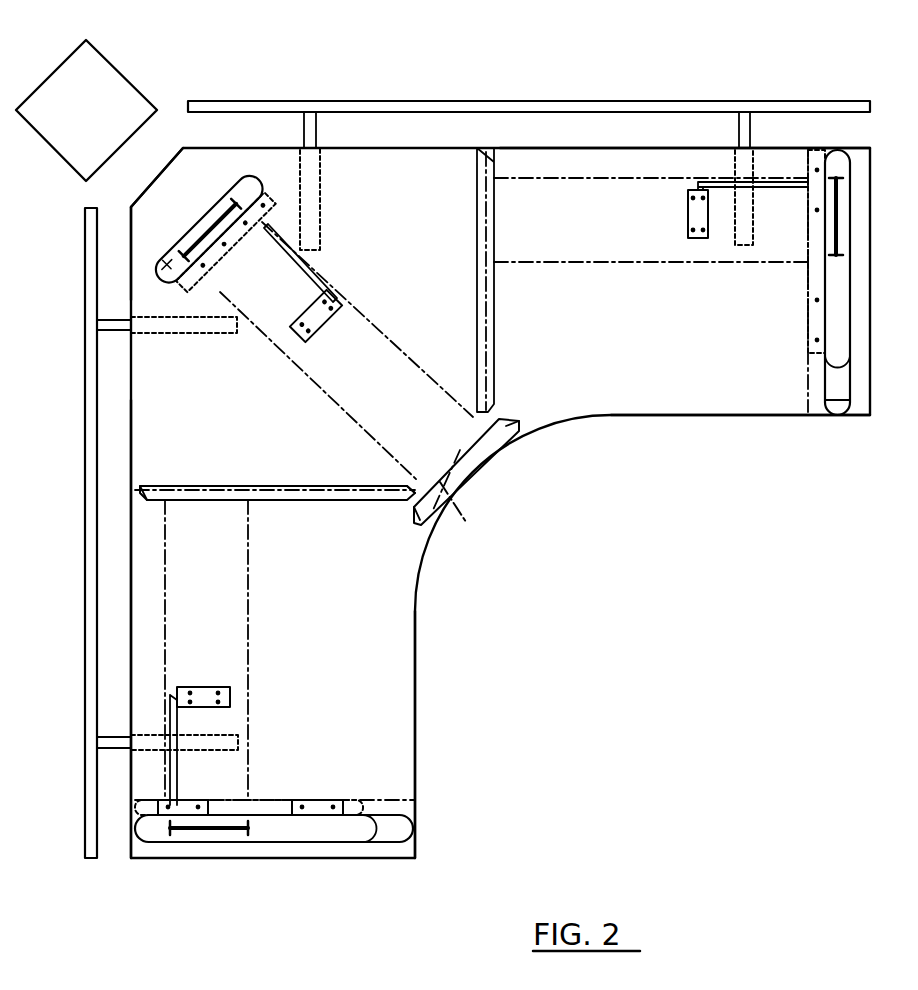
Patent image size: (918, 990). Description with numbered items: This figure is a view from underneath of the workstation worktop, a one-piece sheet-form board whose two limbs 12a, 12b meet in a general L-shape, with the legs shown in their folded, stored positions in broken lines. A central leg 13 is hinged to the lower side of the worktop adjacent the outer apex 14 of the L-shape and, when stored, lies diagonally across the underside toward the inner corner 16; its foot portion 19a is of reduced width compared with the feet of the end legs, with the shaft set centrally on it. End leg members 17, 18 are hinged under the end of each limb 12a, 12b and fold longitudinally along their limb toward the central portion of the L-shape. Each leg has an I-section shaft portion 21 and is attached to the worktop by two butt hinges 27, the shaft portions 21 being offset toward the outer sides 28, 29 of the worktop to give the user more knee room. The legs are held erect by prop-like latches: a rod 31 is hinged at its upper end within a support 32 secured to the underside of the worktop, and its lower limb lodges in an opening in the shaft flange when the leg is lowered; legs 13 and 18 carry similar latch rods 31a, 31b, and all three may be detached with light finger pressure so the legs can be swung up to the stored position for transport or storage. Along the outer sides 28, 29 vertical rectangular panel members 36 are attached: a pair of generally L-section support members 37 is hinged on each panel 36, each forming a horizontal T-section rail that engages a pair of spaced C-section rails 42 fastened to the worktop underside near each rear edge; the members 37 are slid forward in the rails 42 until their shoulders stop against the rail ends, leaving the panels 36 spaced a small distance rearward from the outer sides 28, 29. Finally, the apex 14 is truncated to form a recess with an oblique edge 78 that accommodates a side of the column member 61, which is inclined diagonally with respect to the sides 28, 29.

The limb 12a is at (745, 400).
The limb 12b is at (405, 748).
The central leg 13 is at (196, 232).
The outer apex 14 is at (144, 210).
The inner corner 16 is at (487, 468).
The end leg member 17 is at (848, 290).
The end leg member 18 is at (250, 605).
The foot portion 19a is at (460, 515).
The shaft portion 21 is at (228, 190).
The butt hinges 27 is at (187, 815).
The outer side 28 is at (131, 525).
The outer side 29 is at (585, 148).
The rod 31 is at (785, 190).
The latch rod 31a is at (330, 272).
The latch rod 31b is at (177, 776).
The support 32 is at (322, 348).
The vertical rectangular panel member 36 is at (432, 100).
The support member 37 is at (316, 130).
The C-section rail 42 is at (320, 200).
The column member 61 is at (118, 82).
The oblique edge 78 is at (182, 152).